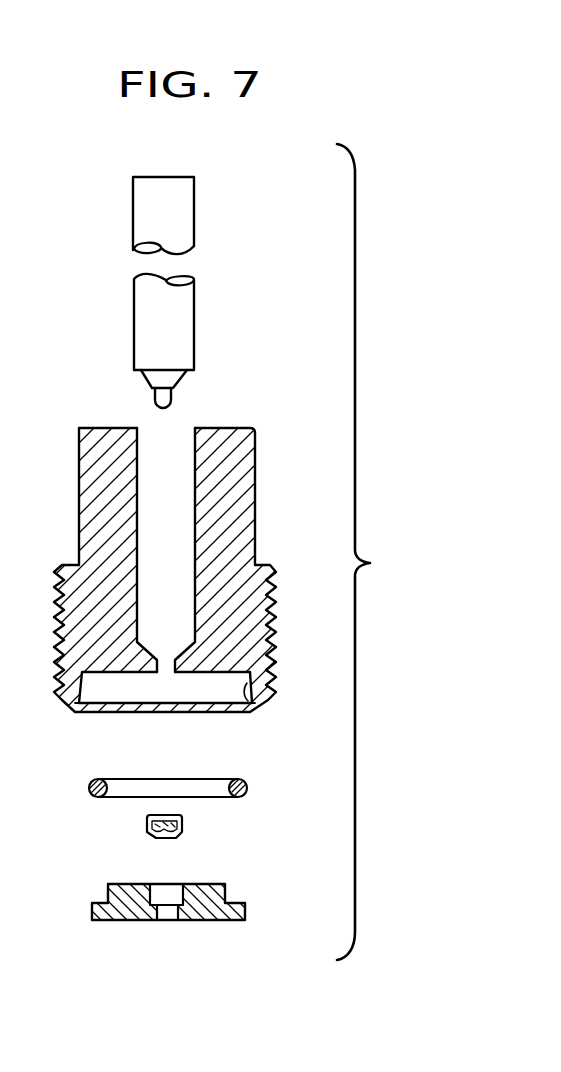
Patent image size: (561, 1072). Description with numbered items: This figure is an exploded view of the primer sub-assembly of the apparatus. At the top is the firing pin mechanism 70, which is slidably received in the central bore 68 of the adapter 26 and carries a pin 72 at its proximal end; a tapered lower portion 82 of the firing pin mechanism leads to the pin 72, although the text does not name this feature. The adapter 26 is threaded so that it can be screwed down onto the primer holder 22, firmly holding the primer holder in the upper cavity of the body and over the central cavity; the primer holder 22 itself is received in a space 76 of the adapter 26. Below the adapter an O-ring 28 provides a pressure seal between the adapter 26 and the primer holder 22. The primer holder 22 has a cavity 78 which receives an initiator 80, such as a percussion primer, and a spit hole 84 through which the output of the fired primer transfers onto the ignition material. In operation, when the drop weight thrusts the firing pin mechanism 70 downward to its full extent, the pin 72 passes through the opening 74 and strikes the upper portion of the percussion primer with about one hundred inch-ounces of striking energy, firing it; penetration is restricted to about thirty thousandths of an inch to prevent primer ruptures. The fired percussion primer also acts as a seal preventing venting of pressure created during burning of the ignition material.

The primer holder 22 is at (168, 911).
The adapter 26 is at (253, 429).
The O-ring 28 is at (248, 783).
The central bore 68 is at (222, 470).
The firing pin mechanism 70 is at (195, 316).
The pin 72 is at (172, 400).
The opening 74 is at (170, 674).
The space 76 is at (248, 706).
The cavity 78 is at (179, 885).
The initiator 80 is at (145, 816).
The tapered shoulder 82 is at (152, 385).
The spit hole 84 is at (163, 921).